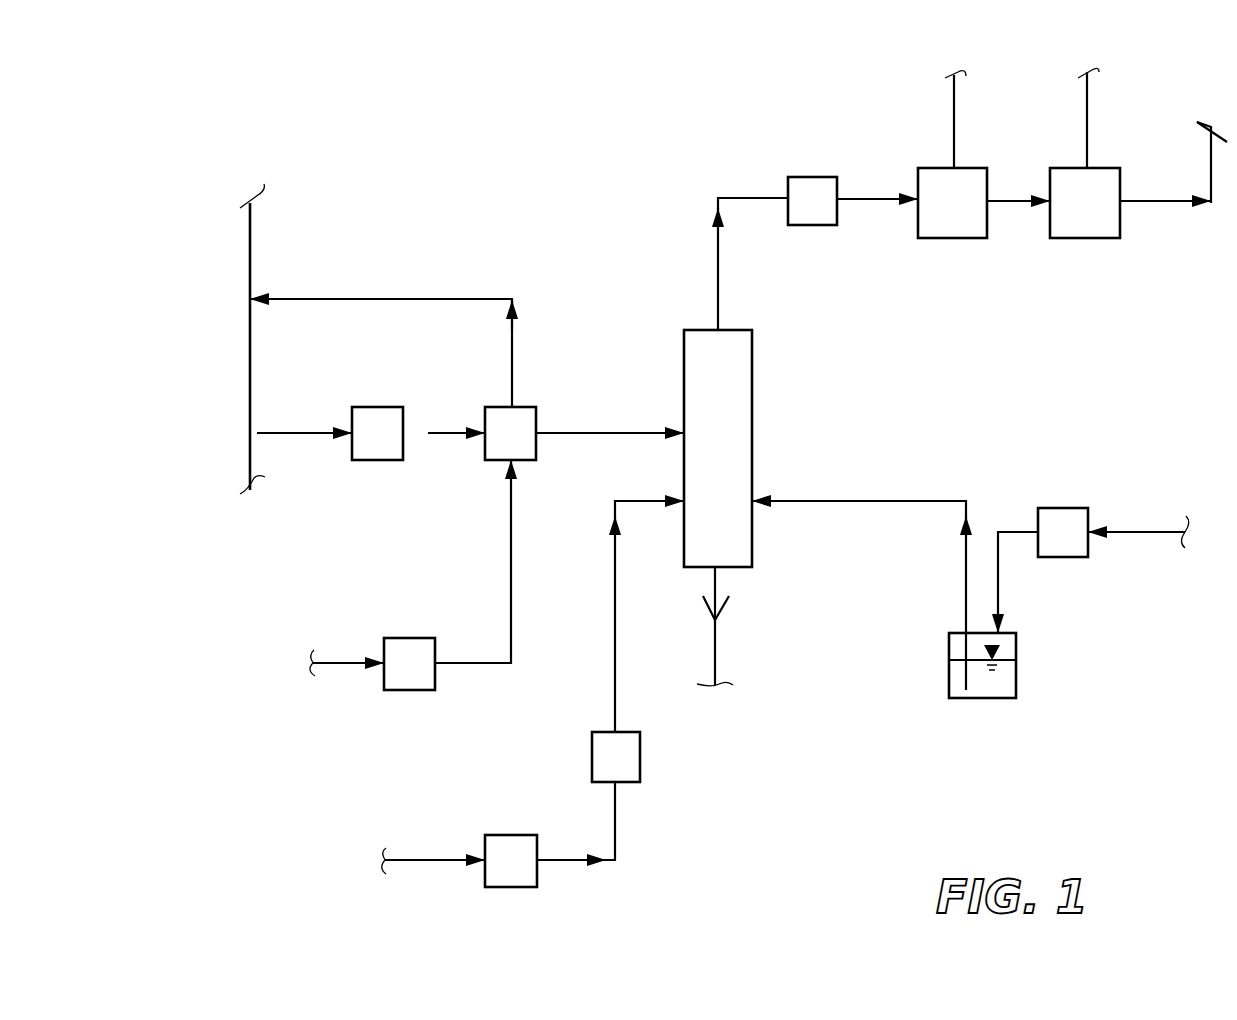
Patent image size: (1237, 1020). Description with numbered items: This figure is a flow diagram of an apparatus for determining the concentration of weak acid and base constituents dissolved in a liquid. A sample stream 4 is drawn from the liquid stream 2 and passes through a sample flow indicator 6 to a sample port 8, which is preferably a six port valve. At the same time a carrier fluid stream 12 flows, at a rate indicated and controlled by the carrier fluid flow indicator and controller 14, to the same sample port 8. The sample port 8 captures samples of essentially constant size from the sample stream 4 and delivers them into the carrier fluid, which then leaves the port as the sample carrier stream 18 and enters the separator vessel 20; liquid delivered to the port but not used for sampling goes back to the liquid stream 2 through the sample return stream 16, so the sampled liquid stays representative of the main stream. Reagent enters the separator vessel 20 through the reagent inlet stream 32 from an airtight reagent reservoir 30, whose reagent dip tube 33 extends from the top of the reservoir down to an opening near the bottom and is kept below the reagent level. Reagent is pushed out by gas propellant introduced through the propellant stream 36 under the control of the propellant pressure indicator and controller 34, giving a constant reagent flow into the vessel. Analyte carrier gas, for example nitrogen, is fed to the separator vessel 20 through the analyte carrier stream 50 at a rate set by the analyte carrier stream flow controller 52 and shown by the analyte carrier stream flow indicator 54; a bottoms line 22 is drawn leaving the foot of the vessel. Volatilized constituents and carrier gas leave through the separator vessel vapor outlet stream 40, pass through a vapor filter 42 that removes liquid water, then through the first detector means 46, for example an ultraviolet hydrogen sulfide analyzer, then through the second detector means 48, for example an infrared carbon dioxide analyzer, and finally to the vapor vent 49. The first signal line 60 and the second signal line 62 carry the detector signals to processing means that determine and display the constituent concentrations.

The liquid stream 2 is at (250, 368).
The sample stream 4 is at (296, 410).
The sample flow indicator 6 is at (388, 407).
The sample port 8 is at (500, 407).
The carrier fluid stream 12 is at (360, 663).
The carrier fluid flow indicator and controller 14 is at (404, 606).
The sample return stream 16 is at (416, 298).
The sample carrier stream 18 is at (620, 432).
The separator vessel 20 is at (752, 357).
The bottoms outlet line 22 is at (717, 583).
The reagent reservoir 30 is at (1016, 643).
The reagent inlet stream 32 is at (896, 501).
The reagent dip tube 33 is at (949, 644).
The propellant pressure indicator and controller 34 is at (1068, 508).
The propellant stream 36 is at (1162, 532).
The separator vessel vapor outlet stream 40 is at (718, 250).
The vapor filter 42 is at (822, 177).
The first detector means 46 is at (922, 168).
The second detector means 48 is at (1060, 168).
The vapor vent 49 is at (1211, 174).
The analyte carrier stream 50 is at (454, 860).
The analyte carrier stream flow controller 52 is at (532, 835).
The analyte carrier stream flow indicator 54 is at (592, 757).
The first signal line 60 is at (954, 108).
The second signal line 62 is at (1087, 125).